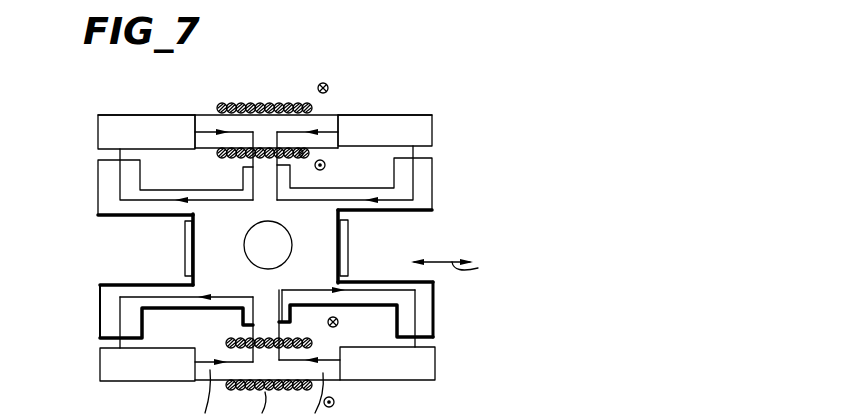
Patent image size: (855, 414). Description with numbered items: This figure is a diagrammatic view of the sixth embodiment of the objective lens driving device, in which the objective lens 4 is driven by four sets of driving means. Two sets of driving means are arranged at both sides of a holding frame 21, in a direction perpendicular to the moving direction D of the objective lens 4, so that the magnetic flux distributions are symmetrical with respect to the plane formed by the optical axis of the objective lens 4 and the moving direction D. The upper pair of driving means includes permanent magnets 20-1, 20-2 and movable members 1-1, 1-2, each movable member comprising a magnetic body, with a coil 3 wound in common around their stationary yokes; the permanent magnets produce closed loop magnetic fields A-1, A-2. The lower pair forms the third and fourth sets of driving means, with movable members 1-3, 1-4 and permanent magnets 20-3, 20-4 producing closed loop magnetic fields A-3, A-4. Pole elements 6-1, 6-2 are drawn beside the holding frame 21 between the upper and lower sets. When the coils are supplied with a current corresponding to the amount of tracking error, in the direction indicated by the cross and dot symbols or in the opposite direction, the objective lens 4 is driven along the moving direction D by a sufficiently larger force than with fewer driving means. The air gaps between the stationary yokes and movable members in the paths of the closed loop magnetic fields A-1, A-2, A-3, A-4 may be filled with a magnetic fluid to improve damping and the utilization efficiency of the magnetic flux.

The permanent magnet 20-1 is at (383, 122).
The permanent magnet 20-2 is at (139, 122).
The permanent magnet 20-3 is at (436, 370).
The permanent magnet 20-4 is at (103, 376).
The coil 3 is at (260, 103).
The closed loop magnetic field A-1 is at (316, 130).
The closed loop magnetic field A-2 is at (207, 130).
The closed loop magnetic field A-3 is at (415, 320).
The closed loop magnetic field A-4 is at (118, 321).
The movable member 1-1 is at (425, 200).
The movable member 1-2 is at (98, 195).
The movable member 1-3 is at (423, 297).
The movable member 1-4 is at (108, 293).
The pole piece 6-1 is at (345, 262).
The pole piece 6-2 is at (187, 267).
The holding frame 21 is at (317, 232).
The objective lens 4 is at (245, 247).
The moving direction D is at (455, 268).